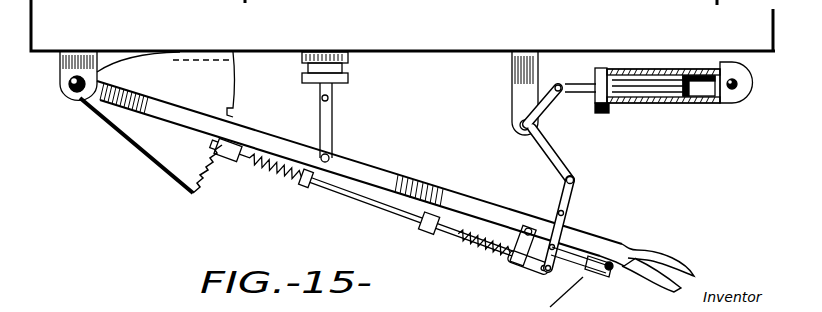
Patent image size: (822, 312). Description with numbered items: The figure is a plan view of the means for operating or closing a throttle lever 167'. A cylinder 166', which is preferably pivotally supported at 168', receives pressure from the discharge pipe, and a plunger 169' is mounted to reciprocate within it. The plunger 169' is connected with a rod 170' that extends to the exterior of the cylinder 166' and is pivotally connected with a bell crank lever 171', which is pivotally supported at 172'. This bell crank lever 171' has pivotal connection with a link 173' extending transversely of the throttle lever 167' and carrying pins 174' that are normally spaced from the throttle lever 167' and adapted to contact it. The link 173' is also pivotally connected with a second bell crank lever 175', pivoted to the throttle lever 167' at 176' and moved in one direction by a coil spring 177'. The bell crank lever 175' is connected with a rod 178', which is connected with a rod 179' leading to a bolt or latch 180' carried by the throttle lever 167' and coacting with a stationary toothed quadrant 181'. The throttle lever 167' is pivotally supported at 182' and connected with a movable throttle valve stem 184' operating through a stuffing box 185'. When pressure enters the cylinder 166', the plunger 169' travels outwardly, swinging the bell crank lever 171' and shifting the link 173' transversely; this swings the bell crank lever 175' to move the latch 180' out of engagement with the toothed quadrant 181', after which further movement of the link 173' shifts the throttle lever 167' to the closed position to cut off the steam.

The cylinder 166' is at (657, 66).
The throttle lever 167' is at (395, 186).
The pivotal support of cylinder 168' is at (750, 101).
The plunger 169' is at (715, 57).
The rod 170' is at (631, 50).
The bell crank lever 171' is at (576, 132).
The pivotal support of bell crank lever 172' is at (494, 93).
The link 173' is at (598, 224).
The pins 174' is at (596, 239).
The bell crank lever 175' is at (512, 278).
The pivot of bell crank lever 176' is at (510, 212).
The coil spring 177' is at (467, 262).
The rod 178' is at (415, 245).
The rod 179' is at (358, 221).
The bolt or latch 180' is at (251, 186).
The stationary toothed quadrant 181' is at (151, 145).
The pivotal support of throttle lever 182' is at (65, 102).
The throttle valve stem 184' is at (345, 48).
The stuffing box 185' is at (296, 89).